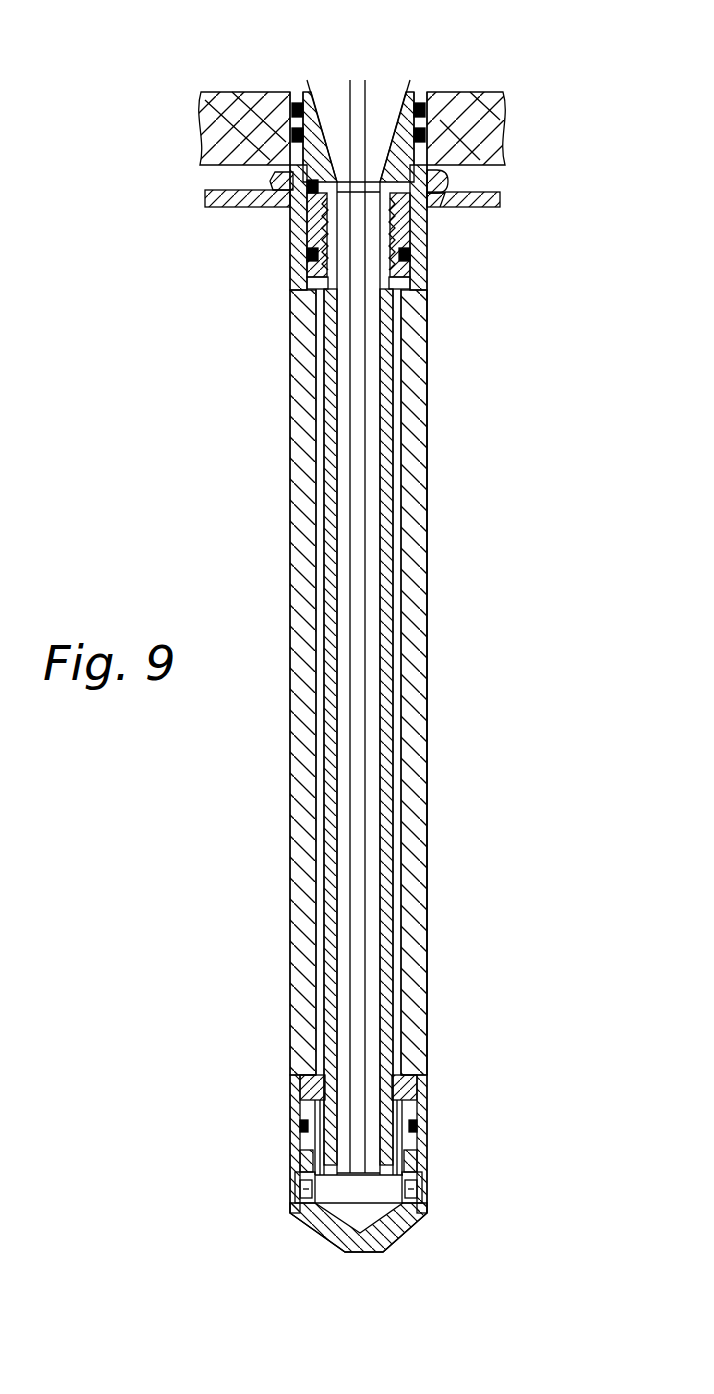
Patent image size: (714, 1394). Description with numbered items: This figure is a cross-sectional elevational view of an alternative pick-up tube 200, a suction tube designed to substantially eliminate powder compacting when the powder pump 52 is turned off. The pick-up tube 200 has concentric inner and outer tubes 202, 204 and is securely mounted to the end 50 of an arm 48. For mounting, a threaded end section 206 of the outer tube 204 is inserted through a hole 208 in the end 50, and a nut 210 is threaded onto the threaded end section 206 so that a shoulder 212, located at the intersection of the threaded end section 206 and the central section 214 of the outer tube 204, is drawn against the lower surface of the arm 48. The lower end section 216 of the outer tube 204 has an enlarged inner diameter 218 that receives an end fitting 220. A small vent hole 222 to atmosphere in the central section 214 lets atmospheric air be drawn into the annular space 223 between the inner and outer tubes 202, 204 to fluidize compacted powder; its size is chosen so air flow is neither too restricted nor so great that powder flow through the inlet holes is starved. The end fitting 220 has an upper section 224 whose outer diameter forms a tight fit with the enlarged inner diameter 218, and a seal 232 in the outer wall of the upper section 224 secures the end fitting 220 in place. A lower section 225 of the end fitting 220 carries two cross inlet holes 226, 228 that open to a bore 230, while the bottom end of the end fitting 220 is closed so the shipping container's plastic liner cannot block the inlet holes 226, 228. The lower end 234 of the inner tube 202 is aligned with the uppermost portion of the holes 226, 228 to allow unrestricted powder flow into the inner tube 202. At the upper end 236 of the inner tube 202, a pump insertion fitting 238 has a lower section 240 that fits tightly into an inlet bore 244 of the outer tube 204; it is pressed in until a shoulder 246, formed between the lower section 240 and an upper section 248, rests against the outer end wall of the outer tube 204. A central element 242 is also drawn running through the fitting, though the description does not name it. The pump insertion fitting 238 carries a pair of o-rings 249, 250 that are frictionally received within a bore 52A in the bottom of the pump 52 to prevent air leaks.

The powder pump 52 is at (492, 122).
The bore in the bottom of pump 52A is at (290, 140).
The pump insertion fitting 238 is at (305, 150).
The shoulder 246 is at (314, 180).
The rod 242 is at (357, 182).
The upper section 248 is at (418, 100).
The o-ring 249 is at (432, 98).
The o-ring 250 is at (427, 138).
The nut 210 is at (272, 178).
The end of arm 50 is at (218, 208).
The arm 48 is at (482, 200).
The threaded end section 206 is at (442, 182).
The hole 208 is at (440, 207).
The lower section 240 is at (315, 226).
The inlet bore 244 is at (310, 258).
The shoulder 212 is at (412, 256).
The upper end of inner tube 236 is at (340, 287).
The vent hole 222 is at (310, 430).
The annular space 223 is at (320, 498).
The pick-up tube 200 is at (350, 652).
The inner tube 202 is at (392, 603).
The central section 214 is at (430, 637).
The outer tube 204 is at (417, 680).
The lower end section 216 is at (290, 1097).
The enlarged inner diameter 218 is at (430, 1105).
The seal 232 is at (418, 1125).
The bore 230 is at (313, 1148).
The upper section 224 is at (420, 1150).
The inlet hole 226 is at (293, 1183).
The inlet hole 228 is at (430, 1187).
The end fitting 220 is at (280, 1201).
The lower end of inner tube 234 is at (400, 1215).
The lower section 225 is at (292, 1215).